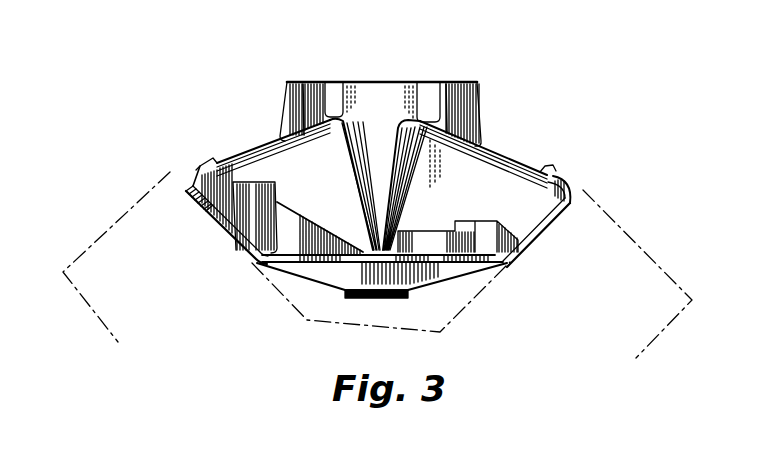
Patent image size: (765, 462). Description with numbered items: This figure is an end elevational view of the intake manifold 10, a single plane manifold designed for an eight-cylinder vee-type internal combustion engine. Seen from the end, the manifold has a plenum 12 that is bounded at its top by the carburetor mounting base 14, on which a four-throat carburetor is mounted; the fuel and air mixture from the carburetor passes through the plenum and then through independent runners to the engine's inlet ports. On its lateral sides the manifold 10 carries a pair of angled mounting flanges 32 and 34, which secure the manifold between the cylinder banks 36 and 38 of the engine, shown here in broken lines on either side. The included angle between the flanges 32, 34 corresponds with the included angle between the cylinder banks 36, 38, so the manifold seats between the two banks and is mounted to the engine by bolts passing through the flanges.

The intake manifold 10 is at (513, 138).
The plenum 12 is at (412, 86).
The carburetor mounting base 14 is at (479, 85).
The angled mounting flange 32 is at (188, 190).
The angled mounting flange 34 is at (571, 189).
The cylinder bank 36 is at (173, 258).
The cylinder bank 38 is at (588, 274).